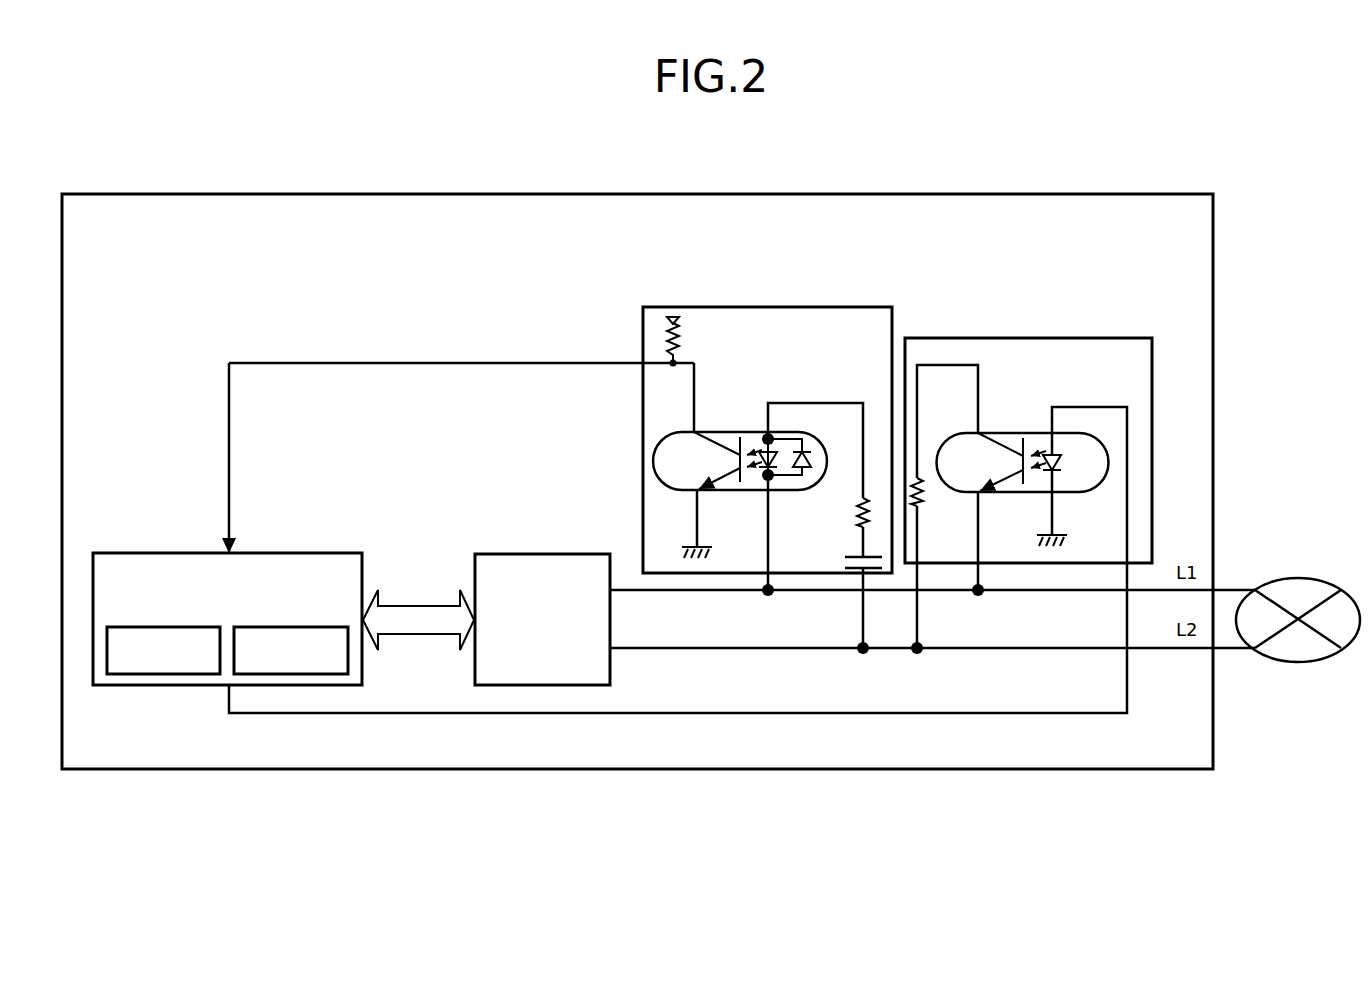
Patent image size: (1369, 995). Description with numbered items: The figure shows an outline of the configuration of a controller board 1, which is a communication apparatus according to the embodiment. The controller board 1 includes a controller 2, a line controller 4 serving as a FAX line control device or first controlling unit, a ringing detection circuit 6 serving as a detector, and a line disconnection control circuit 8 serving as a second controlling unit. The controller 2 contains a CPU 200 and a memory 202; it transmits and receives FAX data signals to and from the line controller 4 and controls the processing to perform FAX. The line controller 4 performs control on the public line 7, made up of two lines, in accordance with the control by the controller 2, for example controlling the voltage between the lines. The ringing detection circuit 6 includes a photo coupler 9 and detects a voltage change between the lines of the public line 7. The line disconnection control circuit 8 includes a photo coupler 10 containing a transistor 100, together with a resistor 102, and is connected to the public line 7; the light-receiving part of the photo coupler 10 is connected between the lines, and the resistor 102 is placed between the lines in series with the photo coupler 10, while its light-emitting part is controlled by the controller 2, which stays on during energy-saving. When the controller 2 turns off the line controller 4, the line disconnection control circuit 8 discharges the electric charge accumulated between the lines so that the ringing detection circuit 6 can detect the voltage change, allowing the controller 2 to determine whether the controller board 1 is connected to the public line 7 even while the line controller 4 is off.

The controller board 1 is at (1163, 195).
The controller 2 is at (227, 605).
The line controller 4 is at (575, 554).
The ringing detection circuit 6 is at (767, 465).
The public line 7 is at (1299, 579).
The line disconnection control circuit 8 is at (1028, 480).
The photocoupler 9 is at (717, 432).
The photo coupler 10 is at (1023, 470).
The transistor 100 is at (1012, 482).
The resistor 102 is at (922, 495).
The CPU 200 is at (177, 627).
The memory 202 is at (295, 627).